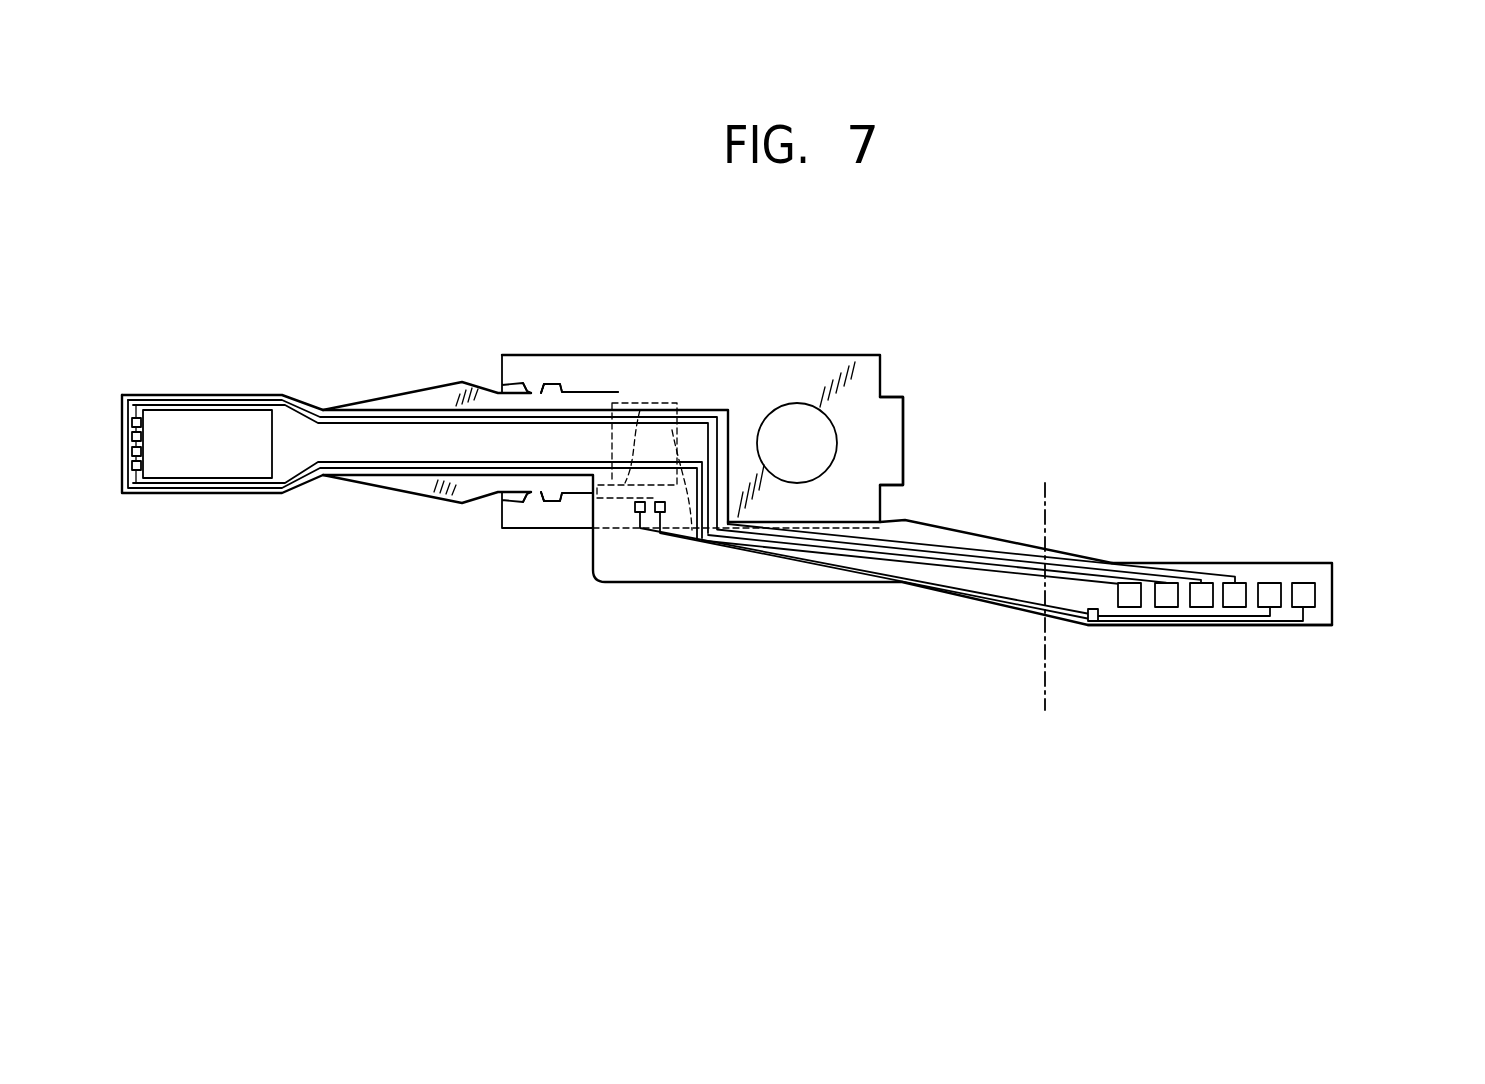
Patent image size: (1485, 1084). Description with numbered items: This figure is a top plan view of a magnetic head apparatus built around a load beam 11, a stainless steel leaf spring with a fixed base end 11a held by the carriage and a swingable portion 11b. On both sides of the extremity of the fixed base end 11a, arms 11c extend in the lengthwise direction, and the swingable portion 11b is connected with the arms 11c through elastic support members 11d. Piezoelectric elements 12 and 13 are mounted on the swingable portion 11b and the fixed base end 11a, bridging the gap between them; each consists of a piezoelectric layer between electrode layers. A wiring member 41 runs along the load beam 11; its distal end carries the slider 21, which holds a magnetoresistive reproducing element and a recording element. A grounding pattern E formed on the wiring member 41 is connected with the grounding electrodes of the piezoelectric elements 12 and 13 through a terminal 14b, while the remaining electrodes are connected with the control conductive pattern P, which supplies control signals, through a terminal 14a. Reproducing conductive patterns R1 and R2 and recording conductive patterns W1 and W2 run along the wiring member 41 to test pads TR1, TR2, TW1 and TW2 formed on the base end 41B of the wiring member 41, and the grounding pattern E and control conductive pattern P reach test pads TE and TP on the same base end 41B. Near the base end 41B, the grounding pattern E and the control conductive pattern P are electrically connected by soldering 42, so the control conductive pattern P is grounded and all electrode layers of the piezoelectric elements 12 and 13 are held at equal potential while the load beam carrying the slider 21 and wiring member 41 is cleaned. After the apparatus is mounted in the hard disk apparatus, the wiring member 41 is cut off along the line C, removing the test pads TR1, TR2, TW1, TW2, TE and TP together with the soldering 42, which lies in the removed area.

The load beam 11 is at (790, 340).
The fixed base end 11a is at (870, 377).
The swingable portion 11b is at (440, 400).
The arm 11c is at (597, 372).
The elastic support member 11d is at (533, 382).
The piezoelectric element 12 is at (657, 398).
The piezoelectric element 13 is at (692, 530).
The terminal 14a is at (635, 510).
The terminal 14b is at (666, 513).
The slider 21 is at (218, 435).
The wiring member 41 is at (292, 432).
The base end 41B is at (1352, 587).
The soldering 42 is at (1093, 622).
The reproducing conductive pattern R1 is at (925, 546).
The reproducing conductive pattern R2 is at (988, 557).
The recording conductive pattern W1 is at (968, 567).
The recording conductive pattern W2 is at (1013, 572).
The control conductive pattern P is at (857, 577).
The grounding pattern E is at (888, 575).
The line C- C is at (1045, 598).
The test pad TW2 is at (1130, 607).
The test pad TW1 is at (1168, 607).
The test pad TR2 is at (1197, 583).
The test pad TR1 is at (1238, 583).
The test pad TE is at (1270, 583).
The test pad TP is at (1300, 583).